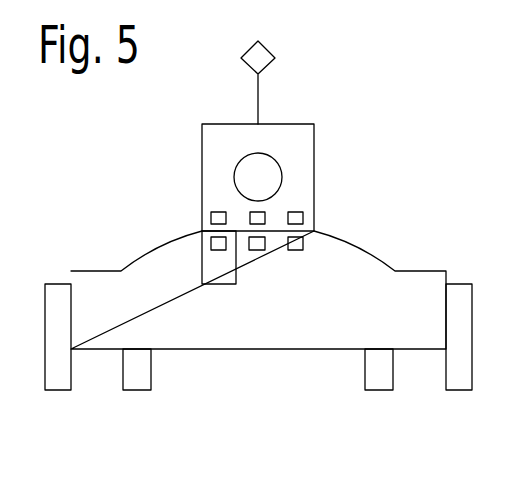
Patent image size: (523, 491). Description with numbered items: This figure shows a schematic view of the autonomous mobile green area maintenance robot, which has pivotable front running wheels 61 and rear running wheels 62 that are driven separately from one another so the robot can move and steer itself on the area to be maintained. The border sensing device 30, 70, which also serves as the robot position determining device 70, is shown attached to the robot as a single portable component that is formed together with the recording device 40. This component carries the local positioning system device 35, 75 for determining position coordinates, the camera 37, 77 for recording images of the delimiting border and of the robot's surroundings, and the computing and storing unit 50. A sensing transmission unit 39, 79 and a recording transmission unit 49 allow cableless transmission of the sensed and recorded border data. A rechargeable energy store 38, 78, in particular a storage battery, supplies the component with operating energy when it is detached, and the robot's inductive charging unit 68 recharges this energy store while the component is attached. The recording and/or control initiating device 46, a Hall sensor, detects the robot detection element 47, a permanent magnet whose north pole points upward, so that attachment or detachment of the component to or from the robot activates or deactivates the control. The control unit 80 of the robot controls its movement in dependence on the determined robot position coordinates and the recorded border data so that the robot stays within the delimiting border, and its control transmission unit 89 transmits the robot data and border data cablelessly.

The border sensing device 30 is at (269, 177).
The robot position determining device 70 is at (314, 171).
The local positioning system device 35 is at (315, 69).
The robot local positioning system device 75 is at (258, 58).
The camera 37 is at (334, 162).
The camera 77 is at (276, 162).
The rechargeable energy store 38 is at (342, 201).
The rechargeable energy store 78 is at (260, 215).
The sensing transmission unit 39 is at (129, 224).
The recording transmission unit 49 is at (129, 224).
The sensing transmission unit 79 is at (218, 217).
The recording device 40 is at (202, 165).
The computing and storing unit 50 is at (202, 183).
The recording and/or control initiating device 46 is at (297, 217).
The robot detection element 47 is at (297, 243).
The front running wheels 61 is at (138, 378).
The rear running wheels 62 is at (56, 378).
The inductive charging unit 68 is at (258, 243).
The control unit 80 is at (202, 269).
The control transmission unit 89 is at (219, 243).